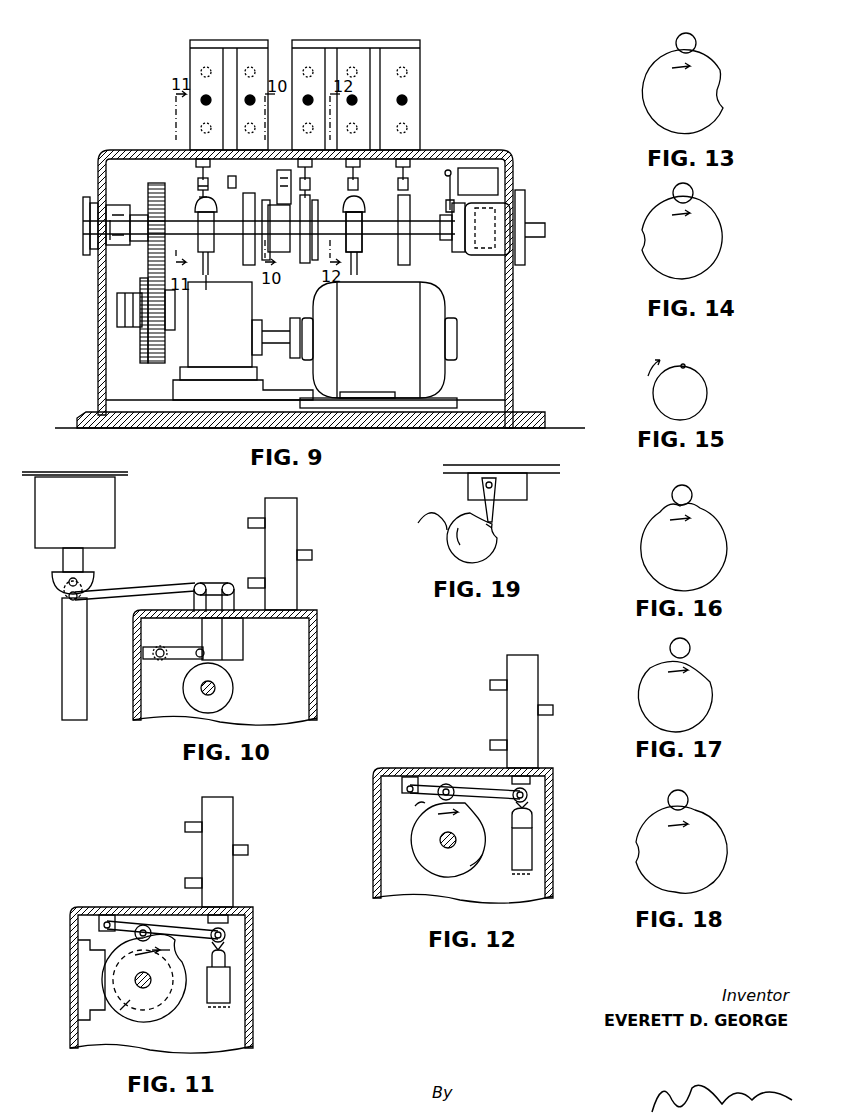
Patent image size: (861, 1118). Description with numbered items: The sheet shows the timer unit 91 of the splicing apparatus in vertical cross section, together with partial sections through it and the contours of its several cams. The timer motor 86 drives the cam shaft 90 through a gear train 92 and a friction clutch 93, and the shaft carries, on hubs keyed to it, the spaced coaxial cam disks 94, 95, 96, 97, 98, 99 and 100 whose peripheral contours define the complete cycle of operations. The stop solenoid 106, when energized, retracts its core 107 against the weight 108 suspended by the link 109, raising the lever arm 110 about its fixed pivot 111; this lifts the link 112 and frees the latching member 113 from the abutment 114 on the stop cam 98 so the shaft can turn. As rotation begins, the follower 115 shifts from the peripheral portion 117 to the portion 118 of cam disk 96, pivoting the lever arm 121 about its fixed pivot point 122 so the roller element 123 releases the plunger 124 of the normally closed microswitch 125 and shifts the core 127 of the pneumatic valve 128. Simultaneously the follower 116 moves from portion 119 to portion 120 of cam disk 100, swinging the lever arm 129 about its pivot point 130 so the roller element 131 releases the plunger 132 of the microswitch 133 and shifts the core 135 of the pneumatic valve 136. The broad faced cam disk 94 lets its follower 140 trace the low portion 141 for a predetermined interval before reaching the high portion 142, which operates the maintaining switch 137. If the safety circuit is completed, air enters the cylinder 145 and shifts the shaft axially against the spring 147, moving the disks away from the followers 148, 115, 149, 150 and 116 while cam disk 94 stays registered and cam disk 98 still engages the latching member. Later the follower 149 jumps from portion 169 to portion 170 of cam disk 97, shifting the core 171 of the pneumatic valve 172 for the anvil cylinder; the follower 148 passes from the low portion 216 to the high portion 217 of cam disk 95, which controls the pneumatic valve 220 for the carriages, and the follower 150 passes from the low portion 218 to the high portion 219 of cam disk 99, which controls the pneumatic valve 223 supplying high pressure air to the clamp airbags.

In FIG. 9, the timer motor 86 is at (433, 312).
In FIG. 9, the cam shaft 90 is at (378, 236).
In FIG. 10, the cam shaft 90 is at (202, 692).
In FIG. 11, the cam shaft 90 is at (150, 988).
In FIG. 12, the cam shaft 90 is at (445, 848).
In FIG. 9, the timer unit 91 is at (522, 354).
In FIG. 10, the timer unit 91 is at (325, 652).
In FIG. 11, the timer unit 91 is at (261, 1018).
In FIG. 12, the timer unit 91 is at (366, 850).
In FIG. 9, the gear train 92 is at (148, 272).
In FIG. 9, the friction clutch 93 is at (126, 325).
In FIG. 9, the cam disk 94 is at (457, 252).
In FIG. 19, the cam disk 94 is at (485, 549).
In FIG. 9, the cam disk 95 is at (406, 266).
In FIG. 18, the cam disk 95 is at (716, 851).
In FIG. 9, the cam disk 96 is at (353, 270).
In FIG. 12, the cam disk 96 is at (440, 866).
In FIG. 17, the cam disk 96 is at (712, 706).
In FIG. 9, the cam disk 97 is at (305, 266).
In FIG. 16, the cam disk 97 is at (715, 548).
In FIG. 9, the stop cam 98 is at (279, 255).
In FIG. 10, the stop cam 98 is at (233, 702).
In FIG. 15, the stop cam 98 is at (700, 401).
In FIG. 9, the cam disk 99 is at (256, 268).
In FIG. 14, the cam disk 99 is at (720, 246).
In FIG. 9, the cam disk 100 is at (206, 290).
In FIG. 11, the cam disk 100 is at (150, 1016).
In FIG. 13, the cam disk 100 is at (718, 108).
In FIG. 10, the stop solenoid 106 is at (105, 515).
In FIG. 10, the core 107 is at (83, 562).
In FIG. 10, the weight 108 is at (62, 655).
In FIG. 10, the link 109 is at (66, 596).
In FIG. 10, the lever arm 110 is at (143, 586).
In FIG. 10, the fixed pivot 111 is at (230, 580).
In FIG. 10, the link 112 is at (200, 633).
In FIG. 10, the latching member 113 is at (178, 656).
In FIG. 10, the abutment 114 is at (210, 660).
In FIG. 15, the abutment 114 is at (688, 366).
In FIG. 12, the follower 115 is at (447, 784).
In FIG. 17, the follower 115 is at (690, 646).
In FIG. 11, the follower 116 is at (141, 926).
In FIG. 13, the follower 116 is at (694, 38).
In FIG. 12, the peripheral portion 117 is at (478, 862).
In FIG. 17, the peripheral portion 117 is at (713, 684).
In FIG. 12, the portion 118 is at (415, 797).
In FIG. 17, the portion 118 is at (662, 660).
In FIG. 11, the portion 119 is at (172, 952).
In FIG. 13, the portion 119 is at (722, 80).
In FIG. 11, the portion 120 is at (118, 1014).
In FIG. 13, the portion 120 is at (660, 62).
In FIG. 9, the lever arm 121 is at (370, 182).
In FIG. 12, the lever arm 121 is at (473, 785).
In FIG. 12, the fixed pivot point 122 is at (405, 778).
In FIG. 9, the roller element 123 is at (356, 178).
In FIG. 12, the roller element 123 is at (527, 795).
In FIG. 9, the plunger 124 is at (362, 200).
In FIG. 12, the plunger 124 is at (532, 812).
In FIG. 9, the microswitch 125 is at (356, 228).
In FIG. 12, the microswitch 125 is at (532, 845).
In FIG. 12, the core 127 is at (530, 780).
In FIG. 9, the pneumatic valve 128 is at (365, 58).
In FIG. 12, the pneumatic valve 128 is at (528, 692).
In FIG. 9, the lever arm 129 is at (198, 182).
In FIG. 11, the lever arm 129 is at (166, 925).
In FIG. 11, the pivot point 130 is at (100, 922).
In FIG. 9, the roller element 131 is at (207, 180).
In FIG. 11, the roller element 131 is at (225, 935).
In FIG. 9, the plunger 132 is at (199, 196).
In FIG. 11, the plunger 132 is at (222, 947).
In FIG. 9, the microswitch 133 is at (200, 210).
In FIG. 11, the microswitch 133 is at (230, 985).
In FIG. 9, the core 135 is at (198, 160).
In FIG. 11, the core 135 is at (228, 918).
In FIG. 9, the pneumatic valve 136 is at (190, 61).
In FIG. 11, the pneumatic valve 136 is at (222, 878).
In FIG. 9, the maintaining switch 137 is at (495, 172).
In FIG. 19, the maintaining switch 137 is at (520, 491).
In FIG. 9, the follower 140 is at (446, 206).
In FIG. 19, the follower 140 is at (495, 520).
In FIG. 19, the low portion 141 is at (494, 526).
In FIG. 19, the high portion 142 is at (423, 532).
In FIG. 9, the cylinder 145 is at (510, 203).
In FIG. 9, the spring 147 is at (92, 248).
In FIG. 9, the follower 148 is at (408, 176).
In FIG. 18, the follower 148 is at (690, 800).
In FIG. 9, the follower 149 is at (306, 180).
In FIG. 16, the follower 149 is at (692, 494).
In FIG. 9, the follower 150 is at (230, 182).
In FIG. 14, the follower 150 is at (692, 194).
In FIG. 16, the portion 169 is at (662, 520).
In FIG. 16, the portion 170 is at (650, 578).
In FIG. 9, the core 171 is at (298, 160).
In FIG. 9, the pneumatic valve 172 is at (306, 52).
In FIG. 10, the pneumatic valve 172 is at (285, 540).
In FIG. 18, the low portion 216 is at (656, 824).
In FIG. 18, the high portion 217 is at (706, 880).
In FIG. 14, the low portion 218 is at (655, 210).
In FIG. 14, the high portion 219 is at (656, 273).
In FIG. 9, the pneumatic valve 220 is at (412, 86).
In FIG. 9, the pneumatic valve 223 is at (250, 52).